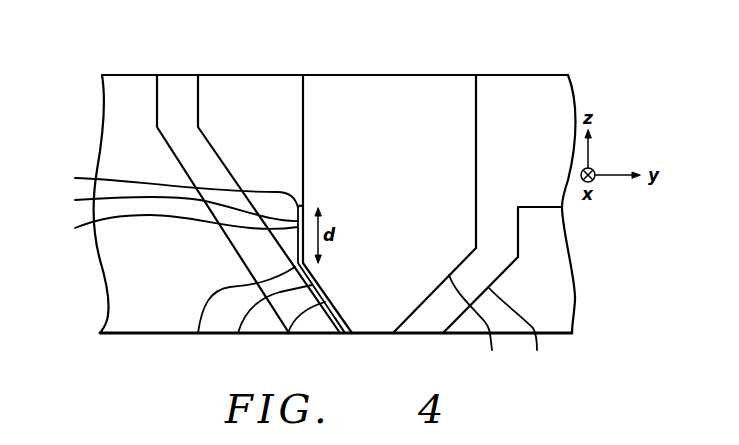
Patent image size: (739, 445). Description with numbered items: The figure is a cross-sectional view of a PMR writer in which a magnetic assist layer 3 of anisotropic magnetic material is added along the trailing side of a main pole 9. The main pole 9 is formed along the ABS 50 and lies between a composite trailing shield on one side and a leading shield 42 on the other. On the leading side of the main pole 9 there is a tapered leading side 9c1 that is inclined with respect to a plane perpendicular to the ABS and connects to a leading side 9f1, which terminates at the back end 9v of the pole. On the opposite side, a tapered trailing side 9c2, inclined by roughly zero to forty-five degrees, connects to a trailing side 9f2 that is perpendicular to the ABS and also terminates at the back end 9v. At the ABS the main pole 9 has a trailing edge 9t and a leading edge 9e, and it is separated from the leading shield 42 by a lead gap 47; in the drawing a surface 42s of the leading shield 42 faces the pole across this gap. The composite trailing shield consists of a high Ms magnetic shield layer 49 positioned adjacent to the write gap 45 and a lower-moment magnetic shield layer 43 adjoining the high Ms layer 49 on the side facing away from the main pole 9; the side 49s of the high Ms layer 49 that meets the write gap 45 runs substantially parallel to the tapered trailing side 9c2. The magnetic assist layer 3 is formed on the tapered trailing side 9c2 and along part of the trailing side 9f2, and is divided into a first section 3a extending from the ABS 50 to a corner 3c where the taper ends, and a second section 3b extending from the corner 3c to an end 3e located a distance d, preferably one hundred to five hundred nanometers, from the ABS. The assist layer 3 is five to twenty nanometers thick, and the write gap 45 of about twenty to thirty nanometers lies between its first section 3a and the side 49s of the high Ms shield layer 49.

The magnetic assist layer 3 is at (176, 226).
The first section 3a is at (288, 333).
The second section 3b is at (173, 206).
The corner 3c is at (198, 333).
The end 3e is at (173, 188).
The main pole 9 is at (346, 84).
The tapered leading side 9c1 is at (478, 322).
The tapered trailing side 9c2 is at (318, 290).
The leading edge 9e is at (393, 333).
The leading side 9f1 is at (476, 98).
The trailing side 9f2 is at (303, 100).
The trailing edge 9t is at (350, 333).
The back end 9v is at (403, 78).
The leading shield 42 is at (563, 283).
The disk slot surface 42s is at (522, 328).
The 19 kG magnetic shield layer 43 is at (115, 273).
The write gap 45 is at (342, 333).
The lead gap 47 is at (427, 325).
The high Ms magnetic shield layer 49 is at (178, 85).
The side of high Ms shield layer 49s is at (238, 333).
The ABS 50 is at (594, 333).